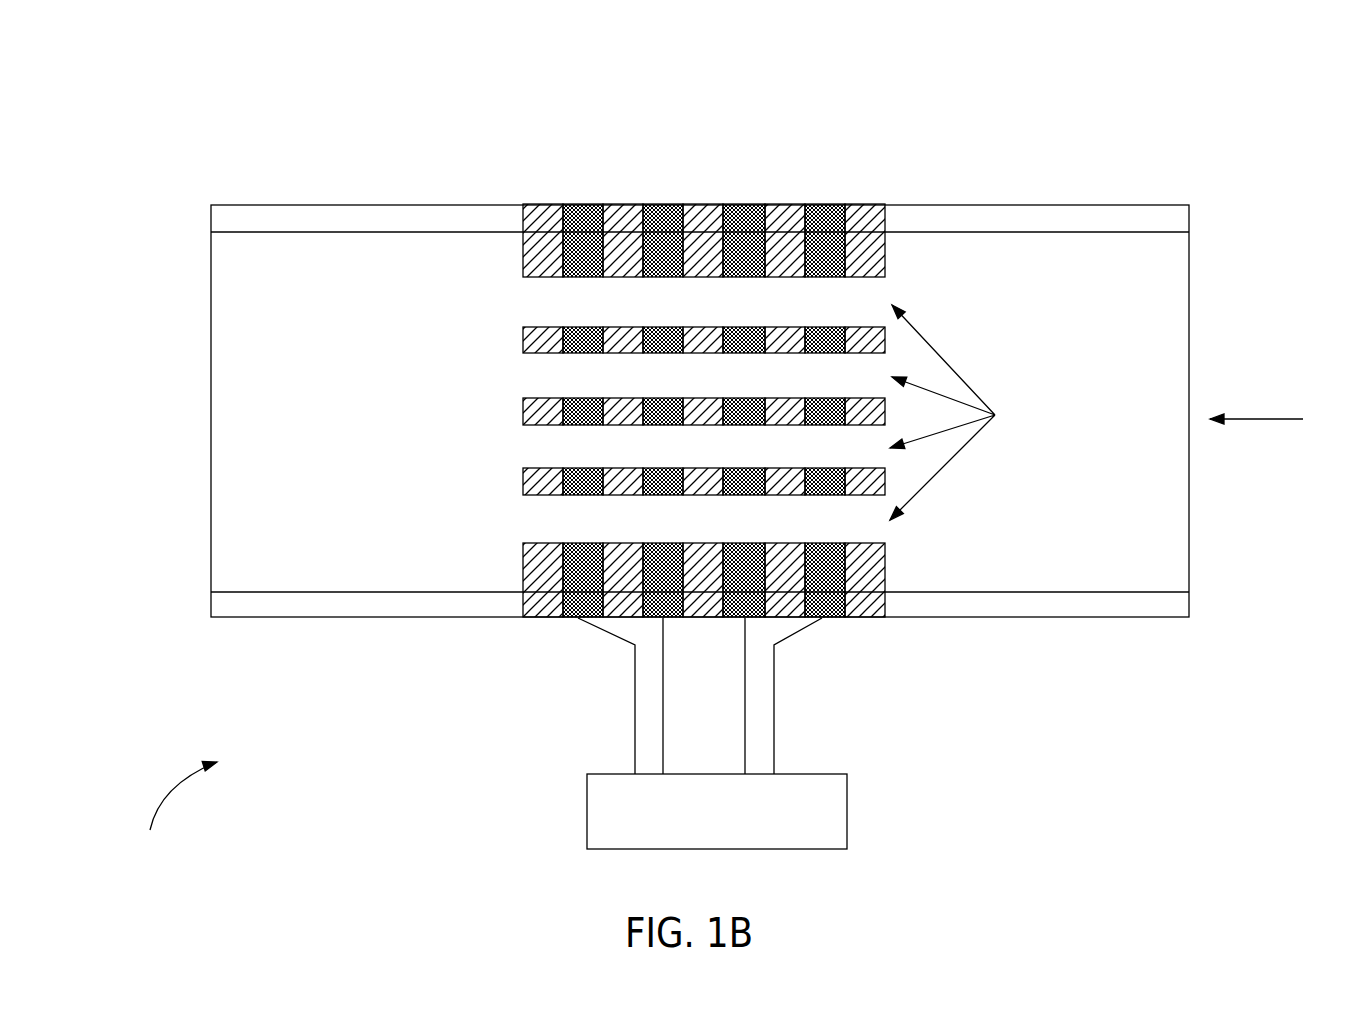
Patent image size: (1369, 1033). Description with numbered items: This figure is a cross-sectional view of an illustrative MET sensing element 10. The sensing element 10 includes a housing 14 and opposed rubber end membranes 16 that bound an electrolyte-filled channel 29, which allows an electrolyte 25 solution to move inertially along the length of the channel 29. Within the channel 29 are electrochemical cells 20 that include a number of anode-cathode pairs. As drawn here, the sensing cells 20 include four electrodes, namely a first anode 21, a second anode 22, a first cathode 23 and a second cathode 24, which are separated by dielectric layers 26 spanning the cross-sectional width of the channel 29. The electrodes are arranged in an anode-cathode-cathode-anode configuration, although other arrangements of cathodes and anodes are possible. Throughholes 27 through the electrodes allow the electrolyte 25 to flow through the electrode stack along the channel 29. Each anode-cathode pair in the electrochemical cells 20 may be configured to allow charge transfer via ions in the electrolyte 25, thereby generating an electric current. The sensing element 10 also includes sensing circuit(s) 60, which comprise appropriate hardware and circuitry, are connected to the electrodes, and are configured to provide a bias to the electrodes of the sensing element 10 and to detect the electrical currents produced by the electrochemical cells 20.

The MET sensing element 10 is at (173, 810).
The housing 14 is at (933, 218).
The rubber end membrane 16 is at (1190, 325).
The electrochemical cell 20 is at (702, 402).
The first anode 21 is at (580, 215).
The second anode 22 is at (820, 215).
The first cathode 23 is at (657, 215).
The second cathode 24 is at (745, 215).
The electrolyte 25 is at (322, 385).
The dielectric layer 26 is at (542, 607).
The throughhole 27 is at (960, 412).
The electrolyte-filled channel 29 is at (1277, 421).
The sensing circuit 60 is at (729, 836).